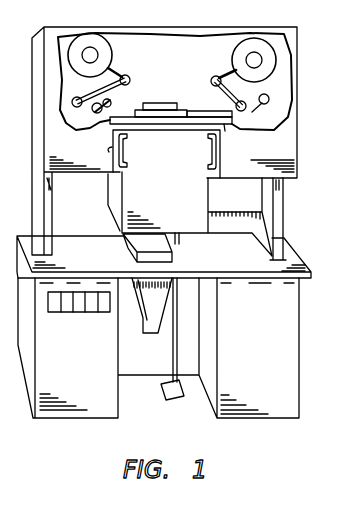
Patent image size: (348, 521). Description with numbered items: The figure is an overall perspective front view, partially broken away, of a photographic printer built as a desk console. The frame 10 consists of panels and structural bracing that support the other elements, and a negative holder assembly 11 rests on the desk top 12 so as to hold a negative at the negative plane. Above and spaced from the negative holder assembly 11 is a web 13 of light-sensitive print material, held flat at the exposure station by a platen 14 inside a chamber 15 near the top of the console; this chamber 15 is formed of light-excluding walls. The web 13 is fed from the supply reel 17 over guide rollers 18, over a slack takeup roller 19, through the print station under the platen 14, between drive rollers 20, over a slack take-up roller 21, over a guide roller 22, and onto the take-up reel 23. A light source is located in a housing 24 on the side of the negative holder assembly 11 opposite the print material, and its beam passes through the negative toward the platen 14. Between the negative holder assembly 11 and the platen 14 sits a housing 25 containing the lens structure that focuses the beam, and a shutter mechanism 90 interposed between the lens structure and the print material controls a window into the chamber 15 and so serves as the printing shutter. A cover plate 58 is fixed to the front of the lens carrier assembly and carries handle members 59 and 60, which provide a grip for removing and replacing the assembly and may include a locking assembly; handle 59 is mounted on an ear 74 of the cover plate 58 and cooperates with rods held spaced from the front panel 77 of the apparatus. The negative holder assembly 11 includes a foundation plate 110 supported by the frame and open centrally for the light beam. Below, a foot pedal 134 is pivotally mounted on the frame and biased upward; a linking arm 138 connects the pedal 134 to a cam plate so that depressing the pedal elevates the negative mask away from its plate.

The frame 10 is at (255, 362).
The negative holder assembly 11 is at (130, 246).
The desk top 12 is at (262, 270).
The web of photographic print material 13 is at (224, 131).
The platen 14 is at (152, 103).
The chamber 15 is at (291, 110).
The supply reel 17 is at (272, 60).
The guide rollers 18 is at (244, 108).
The slack takeup roller 19 is at (214, 79).
The drive rollers 20 is at (67, 122).
The slack take-up roller 21 is at (127, 77).
The guide roller 22 is at (72, 101).
The take-up reel 23 is at (89, 45).
The housing 24 is at (150, 320).
The housing 25 is at (138, 181).
The cover plate 58 is at (170, 217).
The handle member 59 is at (128, 151).
The handle member 60 is at (209, 153).
The ear 74 is at (110, 149).
The front panel 77 is at (68, 152).
The shutter mechanism 90 is at (181, 111).
The foundation plate 110 is at (169, 267).
The foot pedal 134 is at (168, 388).
The linking arm 138 is at (174, 303).